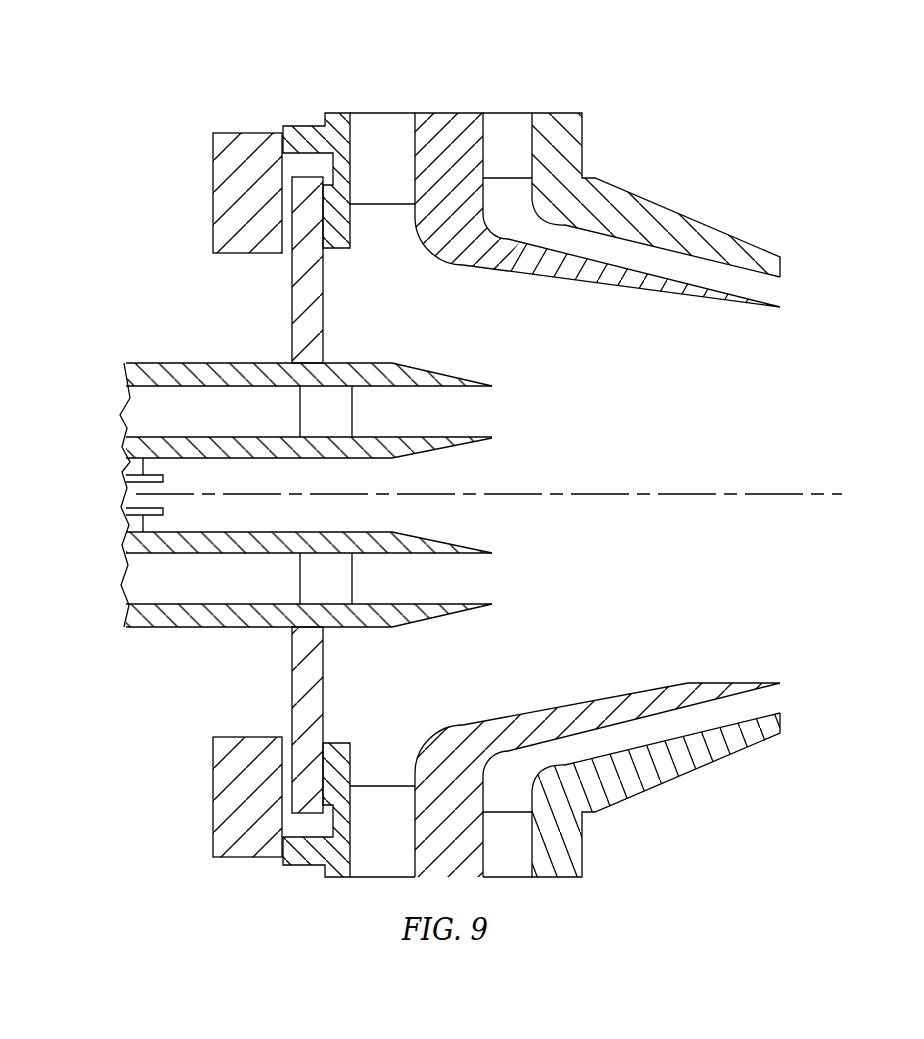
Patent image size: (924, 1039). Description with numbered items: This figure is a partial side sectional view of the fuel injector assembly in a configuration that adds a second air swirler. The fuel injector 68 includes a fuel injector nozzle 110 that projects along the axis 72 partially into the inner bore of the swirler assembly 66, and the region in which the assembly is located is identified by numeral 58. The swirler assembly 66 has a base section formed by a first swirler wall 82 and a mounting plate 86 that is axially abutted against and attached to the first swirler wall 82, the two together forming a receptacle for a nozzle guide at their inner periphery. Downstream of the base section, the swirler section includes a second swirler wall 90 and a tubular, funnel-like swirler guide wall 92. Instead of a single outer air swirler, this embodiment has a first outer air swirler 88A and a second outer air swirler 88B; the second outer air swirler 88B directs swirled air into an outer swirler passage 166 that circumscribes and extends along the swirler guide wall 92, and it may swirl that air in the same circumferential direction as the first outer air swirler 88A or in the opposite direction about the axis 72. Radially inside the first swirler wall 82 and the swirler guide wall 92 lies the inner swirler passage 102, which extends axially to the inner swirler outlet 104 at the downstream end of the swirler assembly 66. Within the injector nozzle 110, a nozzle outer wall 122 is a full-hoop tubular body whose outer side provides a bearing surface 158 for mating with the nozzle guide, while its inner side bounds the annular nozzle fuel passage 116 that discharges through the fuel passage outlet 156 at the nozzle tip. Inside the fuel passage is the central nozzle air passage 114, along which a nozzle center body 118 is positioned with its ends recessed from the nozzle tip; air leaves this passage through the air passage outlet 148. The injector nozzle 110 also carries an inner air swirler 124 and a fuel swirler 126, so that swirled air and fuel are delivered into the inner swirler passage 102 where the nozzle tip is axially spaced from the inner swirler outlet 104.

The combustor section 58 is at (897, 433).
The swirler assembly 66 is at (757, 206).
The fuel injector 68 is at (139, 336).
The axis 72 is at (836, 497).
The first swirler wall 82 is at (312, 125).
The mounting plate 86 is at (234, 133).
The first outer air swirler 88A is at (380, 107).
The second outer air swirler 88B is at (510, 107).
The second swirler wall 90 is at (451, 112).
The swirler guide wall 92 is at (541, 282).
The inner swirler passage 102 is at (645, 378).
The inner swirler outlet 104 is at (763, 362).
The fuel injector nozzle 110 is at (156, 630).
The nozzle air passage 114 is at (333, 507).
The nozzle fuel passage 116 is at (267, 424).
The nozzle center body 118 is at (124, 478).
The nozzle outer wall 122 is at (124, 370).
The inner air swirler 124 is at (124, 451).
The fuel swirler 126 is at (365, 410).
The air passage outlet 148 is at (493, 525).
The fuel passage outlet 156 is at (494, 431).
The bearing surface 158 is at (353, 362).
The outer swirler passage 166 is at (632, 256).